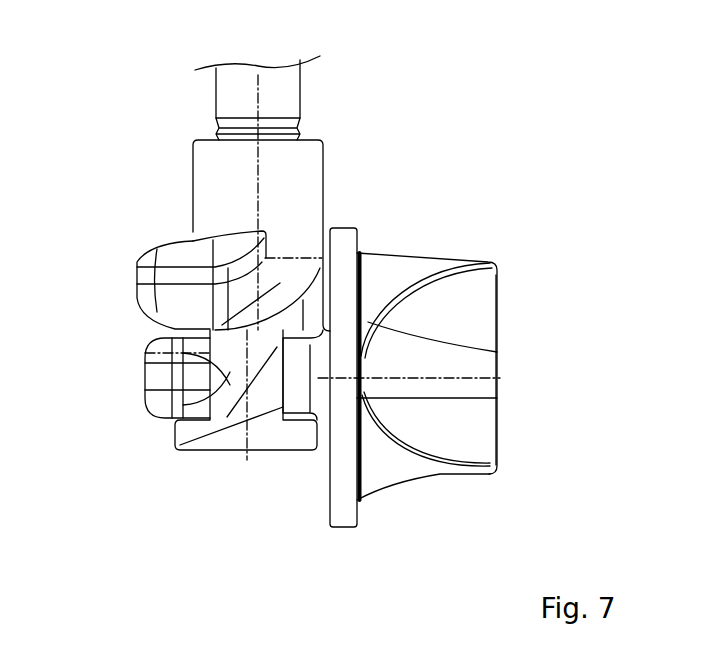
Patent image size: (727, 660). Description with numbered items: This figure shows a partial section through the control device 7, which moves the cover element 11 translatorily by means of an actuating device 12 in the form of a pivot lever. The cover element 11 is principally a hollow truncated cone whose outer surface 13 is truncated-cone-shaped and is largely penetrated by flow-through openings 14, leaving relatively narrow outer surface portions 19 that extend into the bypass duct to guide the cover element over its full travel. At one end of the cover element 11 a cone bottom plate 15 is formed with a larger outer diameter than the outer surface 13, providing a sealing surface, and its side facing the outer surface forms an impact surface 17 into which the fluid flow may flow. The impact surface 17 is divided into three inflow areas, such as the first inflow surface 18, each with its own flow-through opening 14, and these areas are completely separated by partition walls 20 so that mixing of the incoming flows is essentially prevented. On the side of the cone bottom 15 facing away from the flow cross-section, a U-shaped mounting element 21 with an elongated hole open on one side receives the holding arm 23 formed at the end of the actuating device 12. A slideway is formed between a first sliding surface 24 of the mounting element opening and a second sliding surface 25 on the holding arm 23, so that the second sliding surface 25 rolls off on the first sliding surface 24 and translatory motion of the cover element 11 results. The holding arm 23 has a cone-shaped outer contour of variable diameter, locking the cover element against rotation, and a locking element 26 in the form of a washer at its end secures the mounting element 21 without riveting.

The control device 7 is at (590, 204).
The cover element 11 is at (420, 494).
The actuating device 12 is at (188, 170).
The outer surface 13 is at (384, 265).
The flow-through opening 14 is at (497, 310).
The cone bottom plate 15 is at (341, 243).
The impact surface 17 is at (368, 354).
The first inflow surface 18 is at (470, 358).
The outer surface portion 19 is at (440, 262).
The partition wall 20 is at (483, 440).
The mounting element 21 is at (140, 378).
The holding arm 23 is at (150, 355).
The first sliding surface 24 is at (225, 385).
The second sliding surface 25 is at (172, 412).
The locking element 26 is at (278, 438).